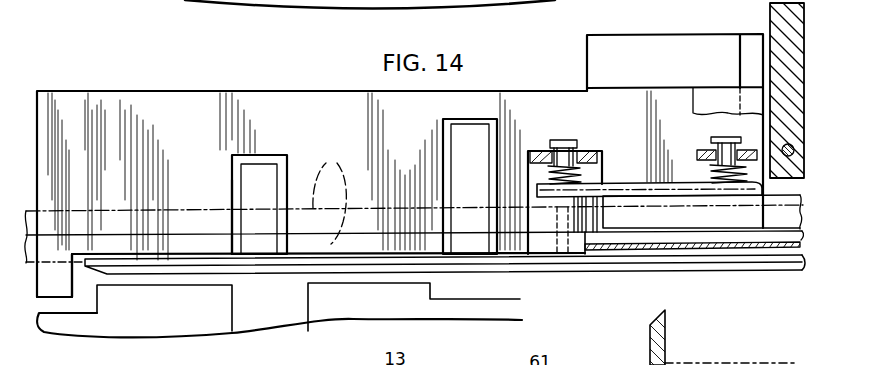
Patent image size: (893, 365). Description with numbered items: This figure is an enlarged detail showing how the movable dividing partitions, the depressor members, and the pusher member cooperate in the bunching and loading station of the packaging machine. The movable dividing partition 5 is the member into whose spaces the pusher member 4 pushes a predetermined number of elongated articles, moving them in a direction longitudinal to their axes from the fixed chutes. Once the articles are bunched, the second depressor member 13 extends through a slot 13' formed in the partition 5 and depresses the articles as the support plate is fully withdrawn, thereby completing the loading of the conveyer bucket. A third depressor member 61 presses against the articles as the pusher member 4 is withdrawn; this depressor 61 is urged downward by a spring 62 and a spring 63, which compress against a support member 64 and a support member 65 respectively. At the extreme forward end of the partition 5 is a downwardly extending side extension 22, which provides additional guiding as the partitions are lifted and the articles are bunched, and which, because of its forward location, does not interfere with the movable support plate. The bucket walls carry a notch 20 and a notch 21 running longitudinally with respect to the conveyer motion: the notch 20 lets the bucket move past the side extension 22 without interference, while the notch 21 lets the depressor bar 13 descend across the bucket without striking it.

The movable dividing partition 5 is at (201, 101).
The second depressor member 13 is at (269, 185).
The slot 13' is at (207, 197).
The third depressor member 61 is at (457, 156).
The spring 62 is at (533, 158).
The support member 64 is at (581, 152).
The spring 63 is at (707, 172).
The support member 65 is at (713, 149).
The pusher member 4 is at (591, 222).
The notch 20 is at (98, 304).
The notch 21 is at (230, 312).
The side extension 22 is at (72, 284).